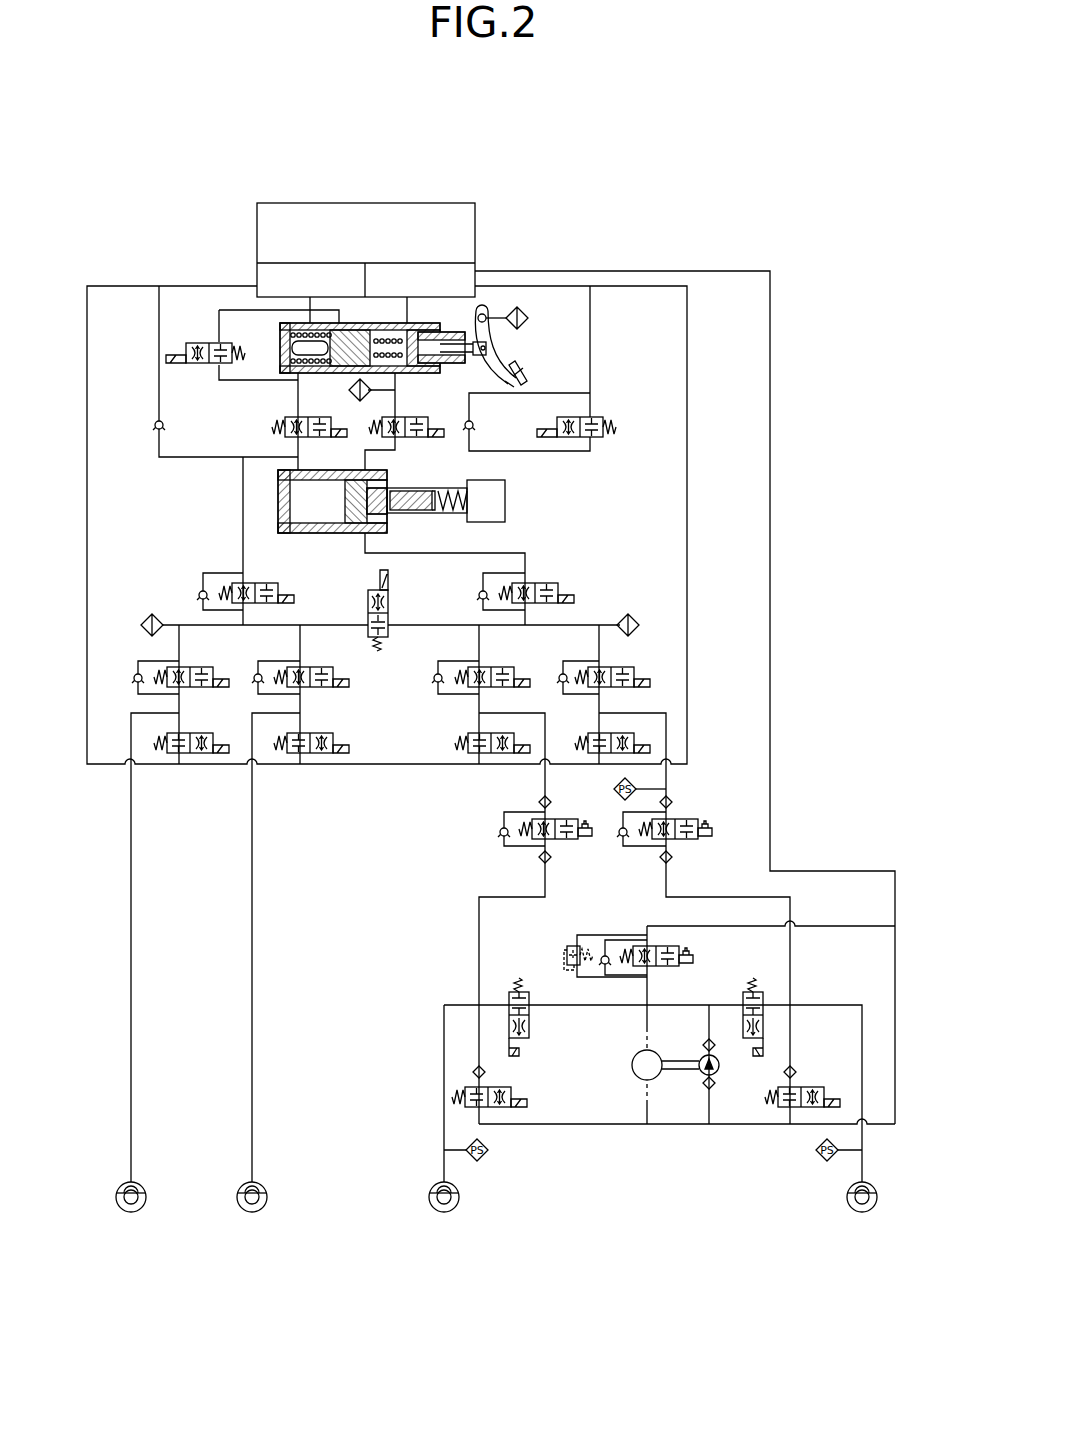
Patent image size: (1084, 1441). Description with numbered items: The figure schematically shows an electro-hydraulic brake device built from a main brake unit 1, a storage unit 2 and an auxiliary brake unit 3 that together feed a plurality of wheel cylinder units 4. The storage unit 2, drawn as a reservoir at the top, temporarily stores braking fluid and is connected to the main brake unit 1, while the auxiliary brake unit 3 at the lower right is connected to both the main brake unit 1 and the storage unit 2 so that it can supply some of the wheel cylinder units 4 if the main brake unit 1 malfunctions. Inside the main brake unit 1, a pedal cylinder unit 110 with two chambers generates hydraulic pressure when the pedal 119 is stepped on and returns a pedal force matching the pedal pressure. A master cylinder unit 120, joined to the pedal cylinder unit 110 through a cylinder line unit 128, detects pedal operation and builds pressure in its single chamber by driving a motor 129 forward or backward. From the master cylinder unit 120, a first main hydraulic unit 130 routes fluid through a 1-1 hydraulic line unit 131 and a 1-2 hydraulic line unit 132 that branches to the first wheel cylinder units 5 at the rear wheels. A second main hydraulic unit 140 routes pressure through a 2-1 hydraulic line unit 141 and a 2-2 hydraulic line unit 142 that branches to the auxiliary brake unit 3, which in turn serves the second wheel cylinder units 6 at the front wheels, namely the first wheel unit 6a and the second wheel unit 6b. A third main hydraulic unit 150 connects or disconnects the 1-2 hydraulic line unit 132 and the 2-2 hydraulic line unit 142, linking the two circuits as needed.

The main brake unit 1 is at (145, 248).
The storage unit 2 is at (364, 196).
The auxiliary brake unit 3 is at (802, 858).
The wheel cylinder units 4 is at (527, 1313).
The first wheel cylinder unit 5 is at (252, 1213).
The second wheel cylinder unit 6 is at (605, 1255).
The first wheel unit 6a is at (452, 1212).
The second wheel unit 6b is at (848, 1200).
The pedal cylinder unit 110 is at (425, 318).
The pedal 119 is at (507, 328).
The master cylinder unit 120 is at (452, 472).
The cylinder line unit 128 is at (396, 400).
The motor 129 is at (505, 500).
The first main hydraulic unit 130 is at (97, 535).
The 1-1 hydraulic line unit 131 is at (243, 530).
The 1-2 hydraulic line unit 132 is at (177, 650).
The second main hydraulic unit 140 is at (853, 540).
The 2-1 hydraulic line unit 141 is at (537, 558).
The 2-2 hydraulic line unit 142 is at (607, 650).
The third main hydraulic unit 150 is at (383, 650).